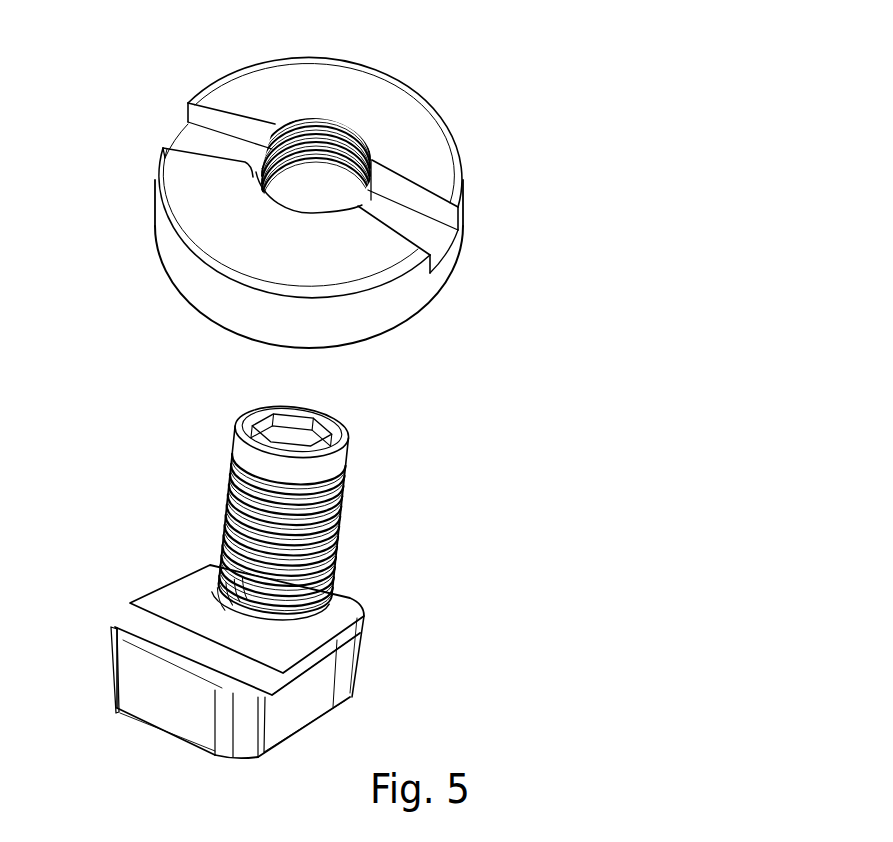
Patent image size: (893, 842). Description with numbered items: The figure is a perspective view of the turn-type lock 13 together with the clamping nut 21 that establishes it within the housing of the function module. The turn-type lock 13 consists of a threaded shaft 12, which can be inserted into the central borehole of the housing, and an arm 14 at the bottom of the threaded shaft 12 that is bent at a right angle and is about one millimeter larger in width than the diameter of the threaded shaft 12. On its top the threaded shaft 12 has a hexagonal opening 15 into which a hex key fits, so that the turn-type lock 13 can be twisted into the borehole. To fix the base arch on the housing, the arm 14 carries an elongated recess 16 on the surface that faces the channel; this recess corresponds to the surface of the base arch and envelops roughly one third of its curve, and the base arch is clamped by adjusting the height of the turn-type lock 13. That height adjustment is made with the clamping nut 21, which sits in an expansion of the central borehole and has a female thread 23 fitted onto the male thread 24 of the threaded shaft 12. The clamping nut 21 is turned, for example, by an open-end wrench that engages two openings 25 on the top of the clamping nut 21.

The threaded shaft 12 is at (294, 489).
The turn-type lock 13 is at (404, 502).
The arm 14 is at (289, 631).
The hexagonal opening 15 is at (300, 426).
The elongated recess 16 is at (129, 606).
The clamping nut 21 is at (408, 135).
The female thread 23 is at (307, 143).
The male thread 24 is at (343, 530).
The openings 25 is at (198, 137).